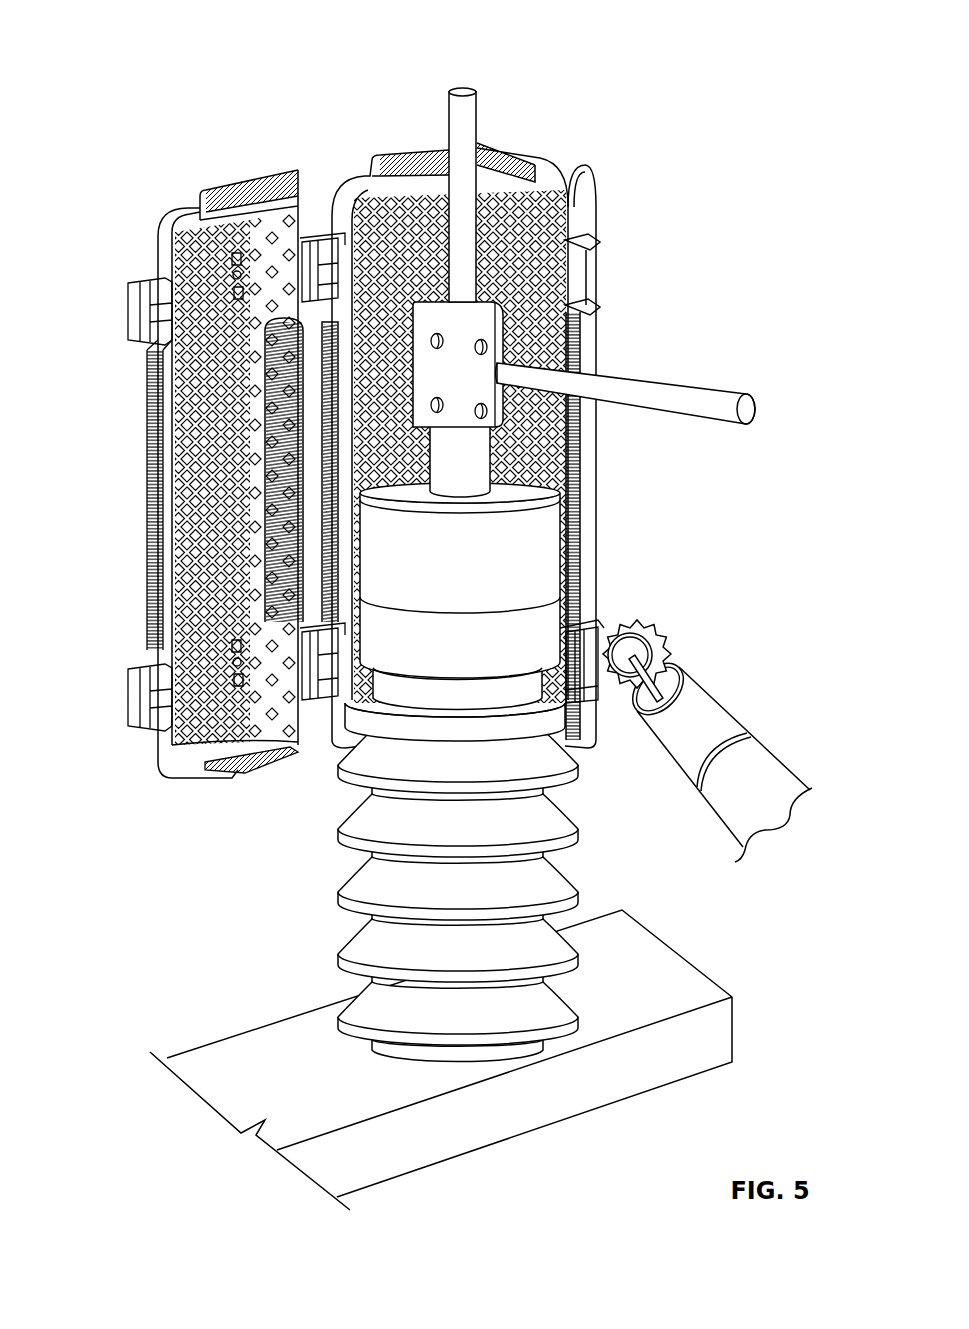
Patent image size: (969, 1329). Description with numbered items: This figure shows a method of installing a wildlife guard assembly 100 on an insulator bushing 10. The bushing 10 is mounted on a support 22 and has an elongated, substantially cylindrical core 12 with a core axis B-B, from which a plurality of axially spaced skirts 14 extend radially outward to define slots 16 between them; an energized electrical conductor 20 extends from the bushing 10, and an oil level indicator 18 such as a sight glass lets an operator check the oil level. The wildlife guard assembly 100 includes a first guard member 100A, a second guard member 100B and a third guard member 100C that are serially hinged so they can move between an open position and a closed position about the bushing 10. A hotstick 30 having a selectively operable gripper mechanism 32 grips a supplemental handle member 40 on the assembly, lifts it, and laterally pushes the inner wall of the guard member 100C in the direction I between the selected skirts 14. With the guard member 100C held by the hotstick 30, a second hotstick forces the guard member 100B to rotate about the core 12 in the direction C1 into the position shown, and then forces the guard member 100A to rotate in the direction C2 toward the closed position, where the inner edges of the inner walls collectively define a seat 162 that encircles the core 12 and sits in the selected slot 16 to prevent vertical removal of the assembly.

The wildlife guard assembly 100 is at (201, 81).
The first guard member 100A is at (158, 218).
The second guard member 100B is at (374, 159).
The third guard member 100C is at (589, 173).
The electrical conductor 20 is at (470, 118).
The oil level indicator 18 is at (548, 548).
The handle member 40 is at (650, 615).
The gripper mechanism 32 is at (720, 725).
The hotstick 30 is at (717, 759).
The insulator bushing 10 is at (462, 896).
The seat 162 is at (437, 748).
The skirts 14 is at (358, 826).
The slots 16 is at (425, 887).
The support 22 is at (312, 1020).
The core 12 is at (425, 988).
The core axis B is at (462, 75).
The direction C1 is at (484, 90).
The direction C2 is at (150, 268).
The direction I is at (690, 628).